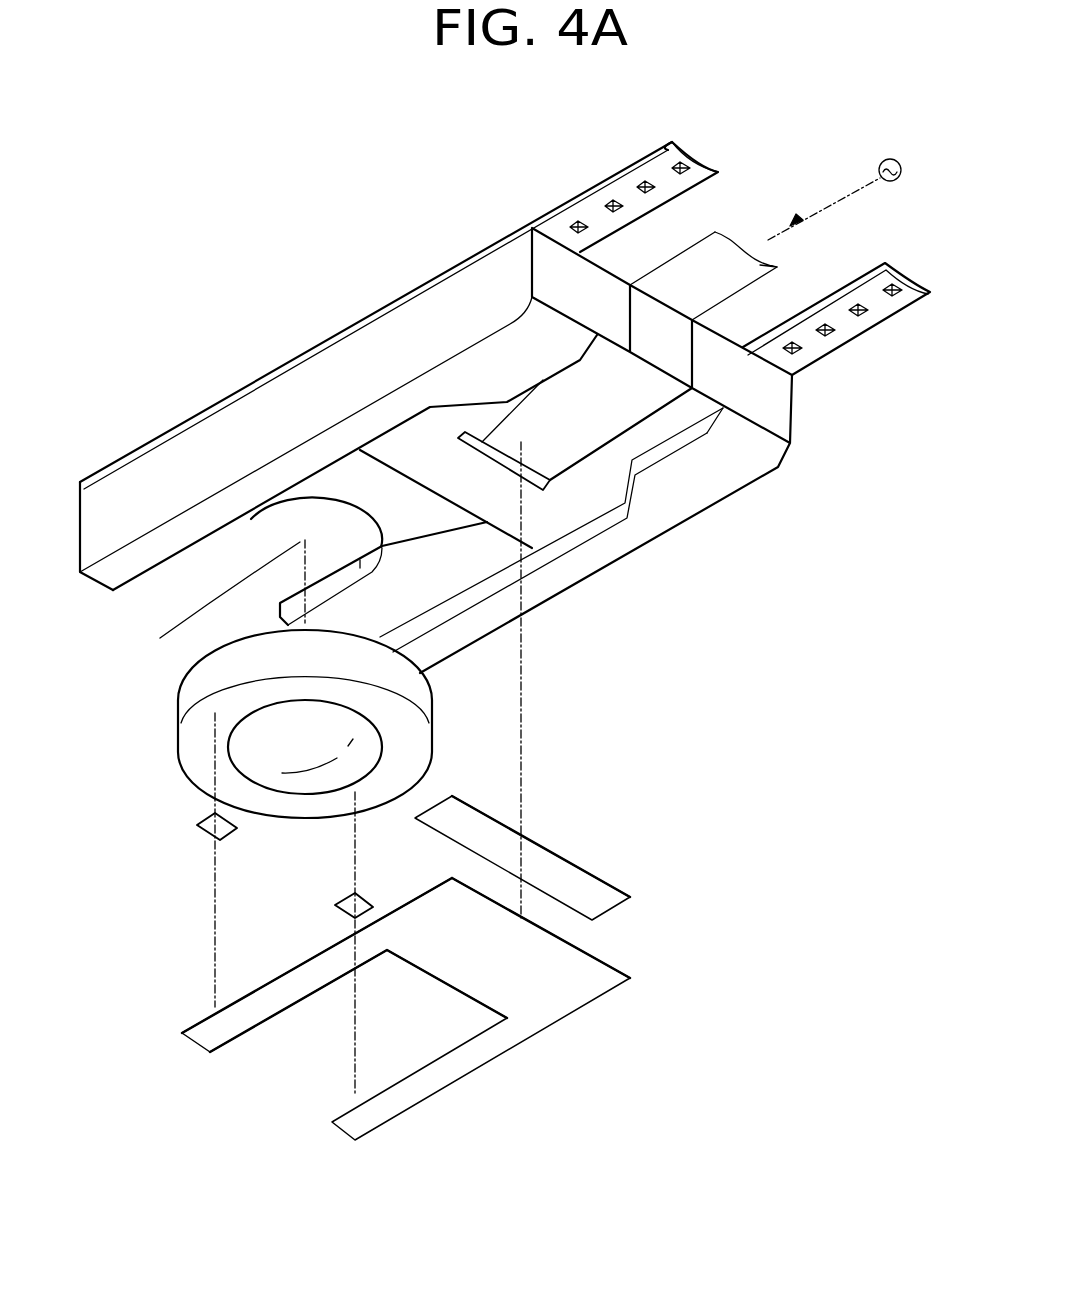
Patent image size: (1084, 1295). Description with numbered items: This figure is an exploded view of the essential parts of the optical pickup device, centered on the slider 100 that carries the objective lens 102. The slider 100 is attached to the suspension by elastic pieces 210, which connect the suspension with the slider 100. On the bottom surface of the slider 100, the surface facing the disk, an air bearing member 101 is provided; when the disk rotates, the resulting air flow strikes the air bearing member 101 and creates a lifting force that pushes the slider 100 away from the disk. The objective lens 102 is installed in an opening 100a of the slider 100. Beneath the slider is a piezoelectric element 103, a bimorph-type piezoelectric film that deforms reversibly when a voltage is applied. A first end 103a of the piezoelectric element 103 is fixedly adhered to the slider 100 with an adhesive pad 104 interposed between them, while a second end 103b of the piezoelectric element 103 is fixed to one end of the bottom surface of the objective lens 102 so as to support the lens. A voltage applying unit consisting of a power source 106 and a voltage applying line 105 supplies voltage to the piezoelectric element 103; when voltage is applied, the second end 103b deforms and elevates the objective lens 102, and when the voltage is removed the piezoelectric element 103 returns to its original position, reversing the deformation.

The slider 100 is at (304, 338).
The opening 100a is at (295, 585).
The air bearing member 101 is at (507, 353).
The objective lens 102 is at (178, 702).
The piezoelectric element 103 is at (395, 1040).
The first end 103a is at (602, 985).
The second end 103b is at (203, 1037).
The adhesive pad 104 is at (197, 827).
The voltage applying line 105 is at (777, 267).
The power source 106 is at (893, 181).
The elastic piece 210 is at (627, 183).